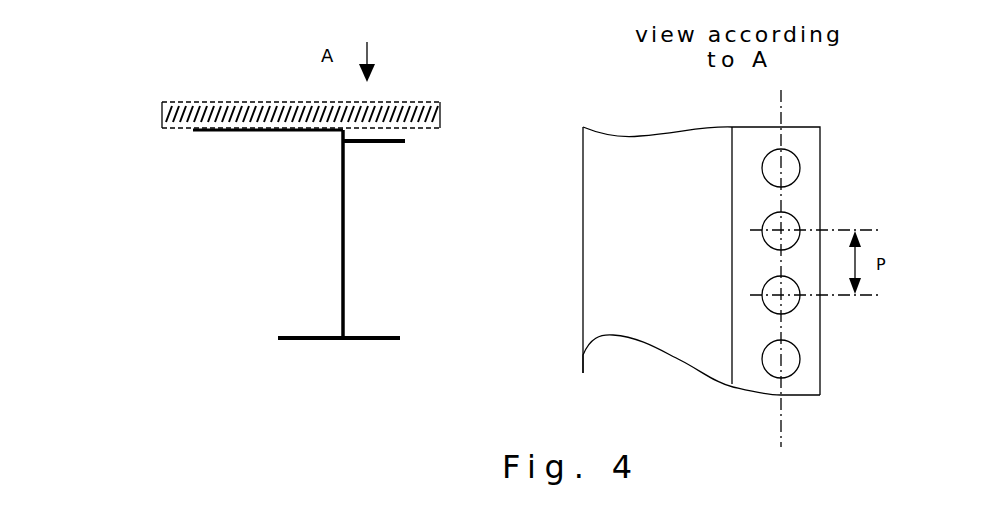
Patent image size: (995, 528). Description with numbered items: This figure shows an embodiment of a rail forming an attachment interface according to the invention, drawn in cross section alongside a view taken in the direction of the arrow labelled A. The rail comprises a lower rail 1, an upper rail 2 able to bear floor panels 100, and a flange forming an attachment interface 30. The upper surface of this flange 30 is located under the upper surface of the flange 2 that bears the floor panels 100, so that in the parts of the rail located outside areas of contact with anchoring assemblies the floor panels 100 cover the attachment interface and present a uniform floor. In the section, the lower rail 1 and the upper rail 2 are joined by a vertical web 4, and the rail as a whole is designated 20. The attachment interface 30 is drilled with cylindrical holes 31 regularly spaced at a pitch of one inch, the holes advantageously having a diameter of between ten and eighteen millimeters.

The floor panels 100 is at (392, 112).
The upper rail 2 is at (263, 131).
The stiffener 20 is at (259, 234).
The web 4 is at (345, 228).
The flange forming an attachment interface 30 is at (372, 144).
The lower rail 1 is at (305, 336).
The cylindrical holes 31 is at (783, 152).